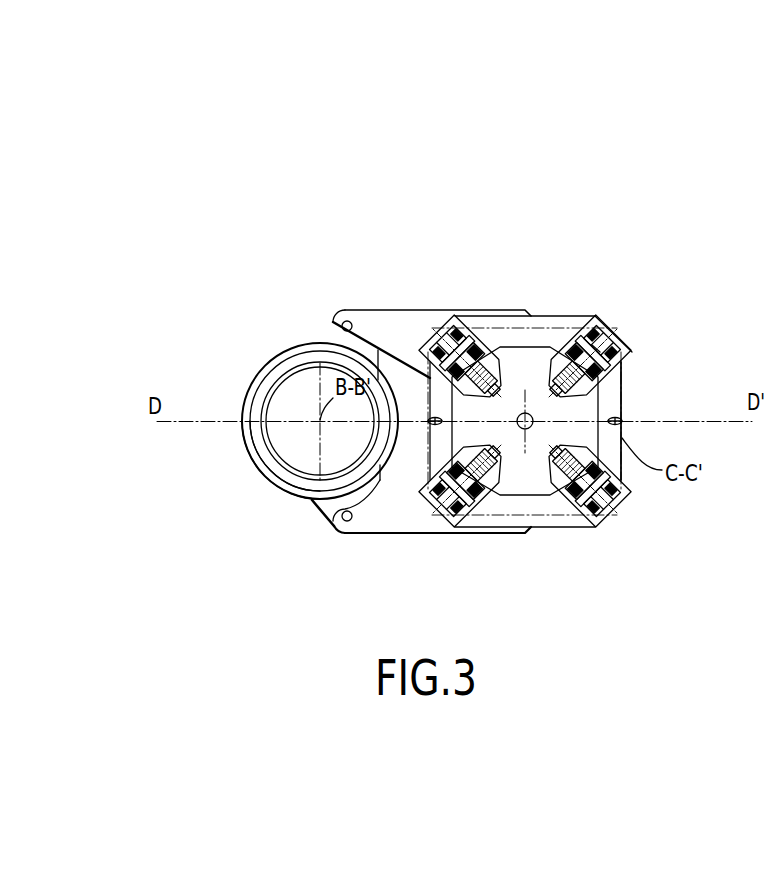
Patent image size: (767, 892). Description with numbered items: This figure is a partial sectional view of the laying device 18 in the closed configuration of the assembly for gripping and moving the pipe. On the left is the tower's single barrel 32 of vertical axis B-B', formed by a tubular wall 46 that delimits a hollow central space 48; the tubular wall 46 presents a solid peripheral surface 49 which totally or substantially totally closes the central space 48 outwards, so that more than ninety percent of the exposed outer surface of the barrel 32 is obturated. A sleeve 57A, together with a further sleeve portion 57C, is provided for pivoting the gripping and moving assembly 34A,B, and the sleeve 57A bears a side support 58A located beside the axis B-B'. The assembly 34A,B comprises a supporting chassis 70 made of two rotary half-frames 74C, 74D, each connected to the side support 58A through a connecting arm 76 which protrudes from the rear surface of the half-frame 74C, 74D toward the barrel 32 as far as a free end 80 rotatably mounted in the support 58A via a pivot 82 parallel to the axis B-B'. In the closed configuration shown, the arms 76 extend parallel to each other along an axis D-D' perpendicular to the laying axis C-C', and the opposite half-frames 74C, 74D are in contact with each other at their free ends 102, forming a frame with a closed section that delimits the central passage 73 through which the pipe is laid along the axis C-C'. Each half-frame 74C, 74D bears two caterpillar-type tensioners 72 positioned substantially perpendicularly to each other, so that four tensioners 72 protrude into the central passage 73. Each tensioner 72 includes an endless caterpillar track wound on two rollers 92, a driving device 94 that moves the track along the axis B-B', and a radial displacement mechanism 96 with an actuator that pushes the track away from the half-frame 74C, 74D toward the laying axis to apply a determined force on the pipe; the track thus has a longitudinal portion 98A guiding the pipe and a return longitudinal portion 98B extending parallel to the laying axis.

The laying device 18 is at (305, 202).
The gripping and moving assemblies 34A,B is at (483, 180).
The barrel 32 is at (212, 441).
The tubular wall 46 is at (270, 385).
The hollow central space 48 is at (283, 452).
The solid peripheral surface 49 is at (278, 477).
The sleeve 57A is at (218, 463).
The intermediate ring 57C is at (252, 397).
The side support 58A is at (266, 300).
The supporting chassis 70 is at (562, 280).
The tensioners 72 is at (576, 419).
The central passage 73 is at (517, 455).
The rotary half-frame 74C is at (568, 330).
The rotary half-frame 74D is at (556, 545).
The connecting arm 76 is at (418, 310).
The free end 80 is at (360, 310).
The pivot 82 is at (342, 327).
The rollers 92 is at (625, 405).
The driving device 94 is at (592, 345).
The radial displacement mechanism 96 is at (622, 380).
The guiding longitudinal portion 98A is at (520, 388).
The return longitudinal portion 98B is at (650, 352).
The free ends 102 is at (428, 418).